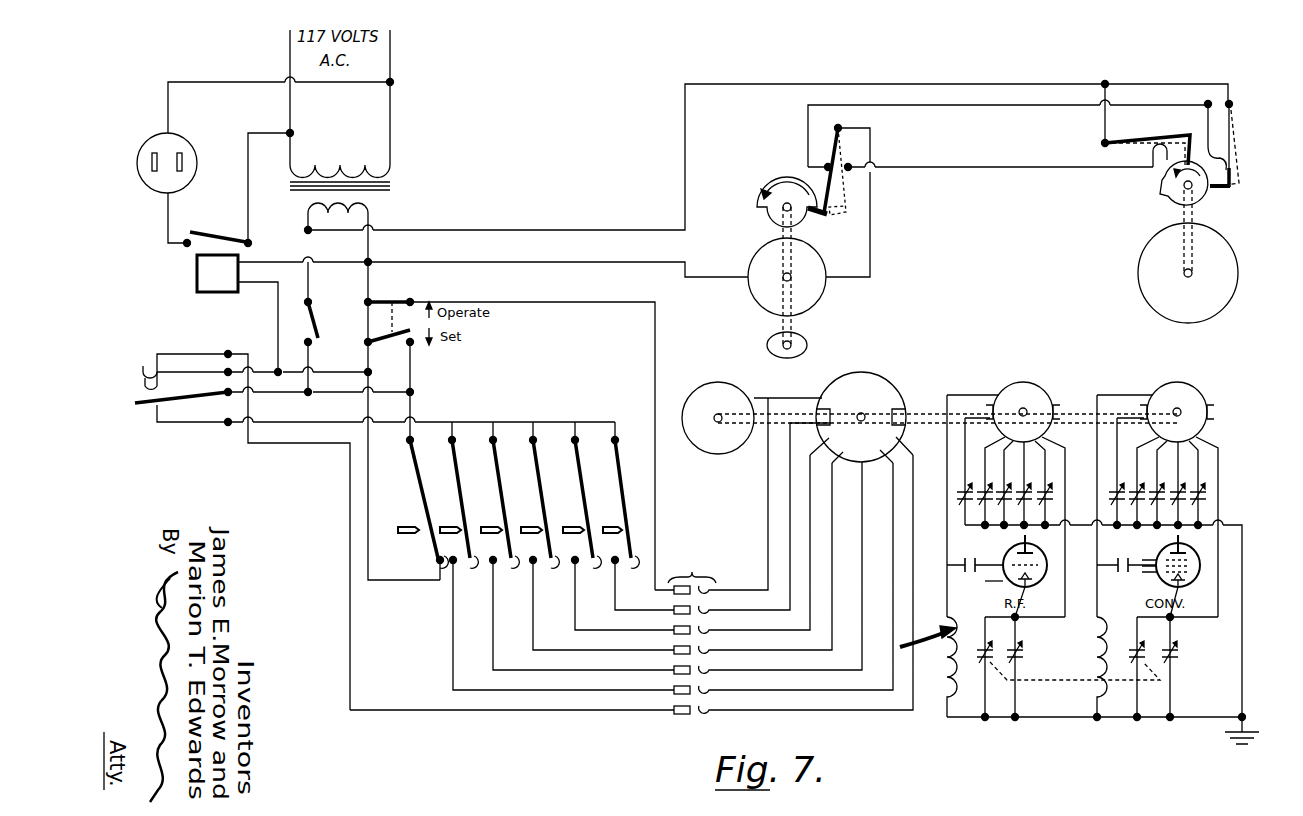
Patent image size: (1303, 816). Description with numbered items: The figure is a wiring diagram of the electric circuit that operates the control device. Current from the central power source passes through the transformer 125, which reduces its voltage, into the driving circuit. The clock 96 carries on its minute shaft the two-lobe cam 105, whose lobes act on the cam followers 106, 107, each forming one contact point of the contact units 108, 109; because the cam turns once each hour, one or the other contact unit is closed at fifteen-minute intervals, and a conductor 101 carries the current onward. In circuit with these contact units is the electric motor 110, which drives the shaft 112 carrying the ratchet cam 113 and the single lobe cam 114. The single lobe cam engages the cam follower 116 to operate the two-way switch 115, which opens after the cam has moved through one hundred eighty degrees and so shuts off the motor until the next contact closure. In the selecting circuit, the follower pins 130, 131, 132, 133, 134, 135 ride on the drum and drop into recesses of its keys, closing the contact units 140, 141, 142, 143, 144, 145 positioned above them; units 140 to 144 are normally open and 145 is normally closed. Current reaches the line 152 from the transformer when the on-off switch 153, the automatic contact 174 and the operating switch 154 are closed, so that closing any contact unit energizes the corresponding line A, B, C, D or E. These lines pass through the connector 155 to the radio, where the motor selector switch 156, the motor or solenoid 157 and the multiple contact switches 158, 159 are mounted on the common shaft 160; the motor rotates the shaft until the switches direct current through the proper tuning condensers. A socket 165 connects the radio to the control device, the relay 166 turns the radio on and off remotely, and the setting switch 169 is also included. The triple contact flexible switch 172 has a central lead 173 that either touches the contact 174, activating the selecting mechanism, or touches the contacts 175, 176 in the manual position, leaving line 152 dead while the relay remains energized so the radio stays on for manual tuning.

The clock 96 is at (1138, 280).
The conductor 101 is at (1085, 153).
The two-lobe cam 105 is at (1165, 200).
The cam follower 106 is at (1218, 190).
The cam follower 107 is at (1192, 133).
The contact unit 108 is at (1236, 140).
The contact unit 109 is at (1152, 132).
The electric motor 110 is at (750, 306).
The shaft 112 is at (783, 233).
The ratchet cam 113 is at (807, 338).
The single lobe cam 114 is at (757, 192).
The two-way switch 115 is at (851, 208).
The cam follower 116 is at (820, 220).
The transformer 125 is at (418, 185).
The follower pin 130 is at (605, 526).
The follower pin 131 is at (565, 526).
The follower pin 132 is at (523, 526).
The follower pin 133 is at (483, 526).
The follower pin 134 is at (442, 526).
The follower pin 135 is at (400, 526).
The contact unit 140 is at (631, 562).
The contact unit 141 is at (593, 562).
The contact unit 142 is at (551, 562).
The contact unit 143 is at (511, 562).
The contact unit 144 is at (470, 562).
The contact unit 145 is at (436, 562).
The line 152 is at (512, 421).
The on-off switch 153 is at (315, 318).
The operating switch 154 is at (400, 296).
The connector 155 is at (700, 556).
The motor selector switch 156 is at (890, 382).
The motor or solenoid 157 is at (692, 452).
The multiple contact switch 158 is at (1045, 388).
The multiple contact switch 159 is at (1197, 388).
The common shaft 160 is at (716, 414).
The socket 165 is at (180, 140).
The relay 166 is at (195, 266).
The setting switch 169 is at (372, 326).
The triple contact flexible switch 172 is at (355, 510).
The central lead 173 is at (170, 400).
The contact point 174 is at (176, 428).
The contact 175 is at (163, 378).
The contact 176 is at (165, 360).